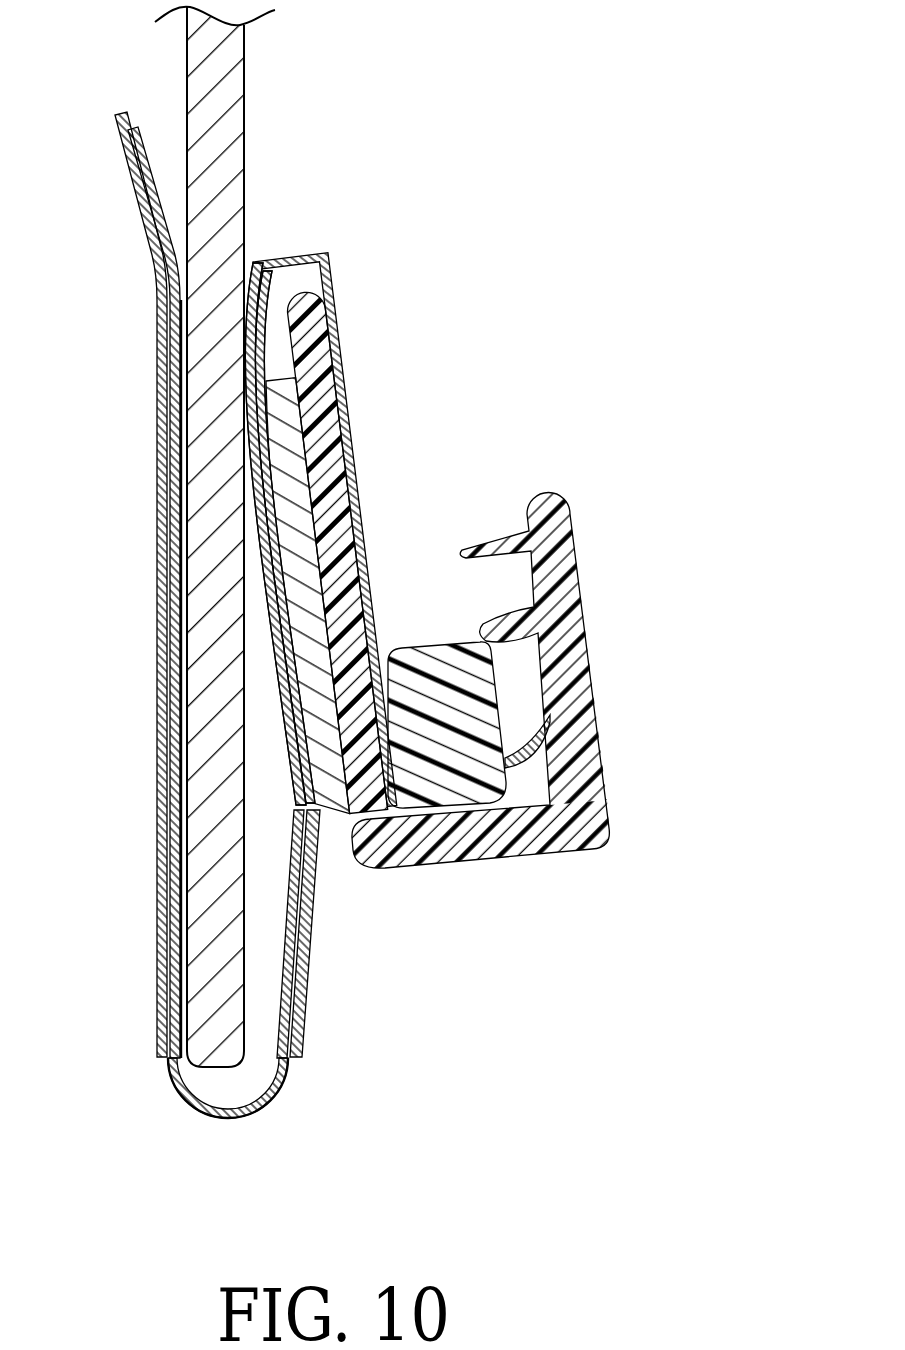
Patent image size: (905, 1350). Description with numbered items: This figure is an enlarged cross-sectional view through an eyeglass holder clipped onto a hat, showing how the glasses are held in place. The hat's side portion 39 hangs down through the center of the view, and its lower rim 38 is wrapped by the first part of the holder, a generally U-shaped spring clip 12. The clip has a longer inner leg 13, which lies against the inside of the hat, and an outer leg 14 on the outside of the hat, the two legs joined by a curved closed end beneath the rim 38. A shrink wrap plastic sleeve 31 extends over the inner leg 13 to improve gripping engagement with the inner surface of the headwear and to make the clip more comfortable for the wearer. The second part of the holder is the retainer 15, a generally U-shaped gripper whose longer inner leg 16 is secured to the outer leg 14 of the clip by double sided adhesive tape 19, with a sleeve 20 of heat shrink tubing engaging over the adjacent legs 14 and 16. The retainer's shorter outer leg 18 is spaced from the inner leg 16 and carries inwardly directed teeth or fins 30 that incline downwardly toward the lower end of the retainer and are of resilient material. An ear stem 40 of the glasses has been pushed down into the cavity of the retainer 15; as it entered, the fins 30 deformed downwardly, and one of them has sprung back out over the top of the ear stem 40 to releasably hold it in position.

The spring clip 12 is at (225, 639).
The inner leg 13 is at (157, 374).
The outer leg 14 is at (313, 918).
The retainer 15 is at (526, 580).
The inner leg 16 is at (337, 387).
The outer leg 18 is at (580, 593).
The double sided adhesive tape 19 is at (290, 513).
The sleeve 20 is at (330, 282).
The teeth 30 is at (537, 760).
The shrink wrap plastic sleeve 31 is at (157, 885).
The lower rim 38 is at (228, 1067).
The side portion 39 is at (244, 118).
The ear stems 40 is at (411, 640).